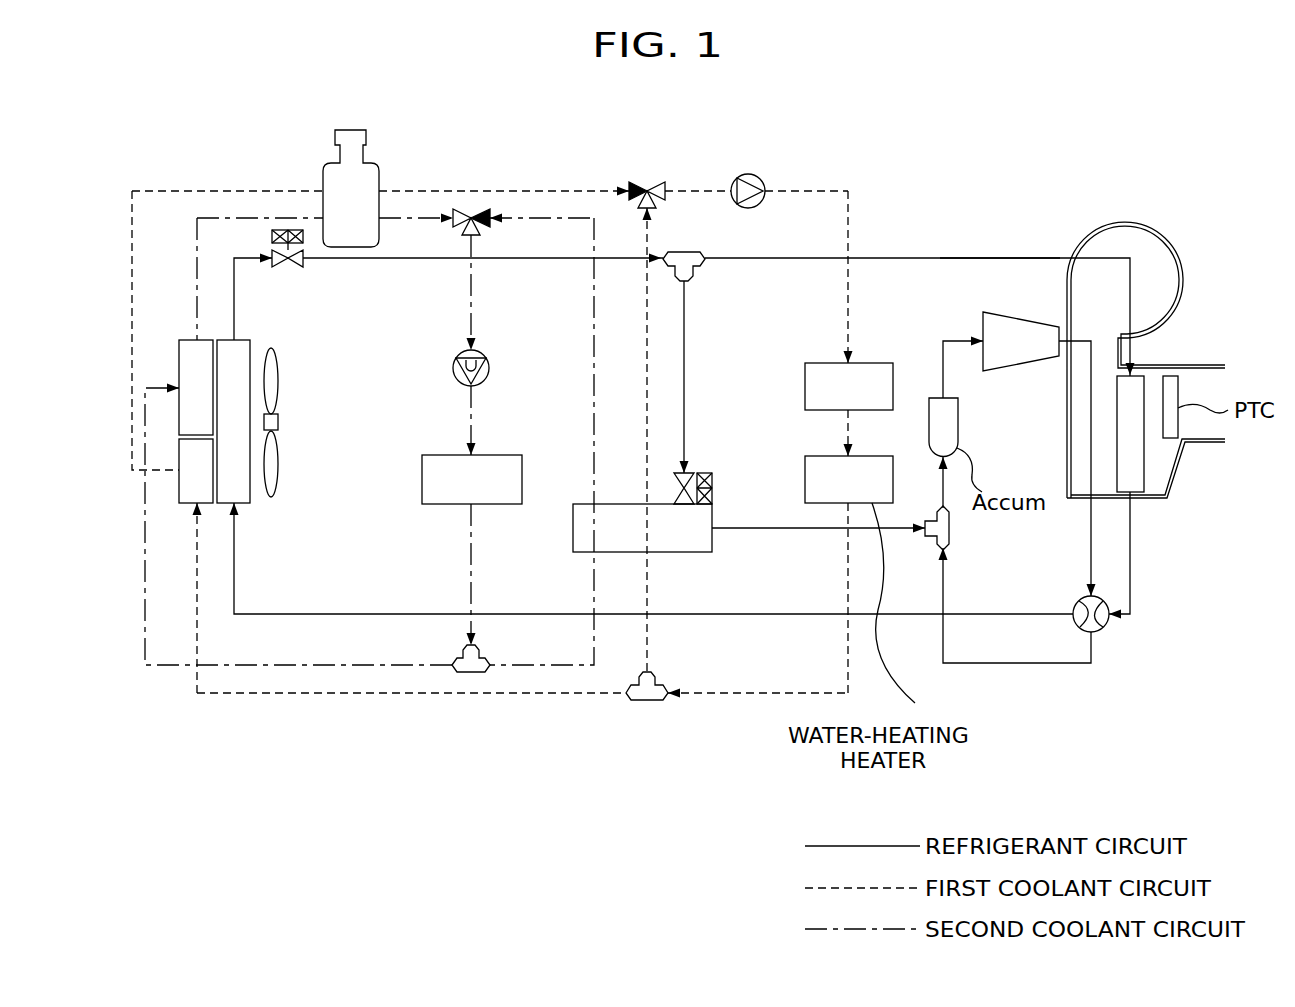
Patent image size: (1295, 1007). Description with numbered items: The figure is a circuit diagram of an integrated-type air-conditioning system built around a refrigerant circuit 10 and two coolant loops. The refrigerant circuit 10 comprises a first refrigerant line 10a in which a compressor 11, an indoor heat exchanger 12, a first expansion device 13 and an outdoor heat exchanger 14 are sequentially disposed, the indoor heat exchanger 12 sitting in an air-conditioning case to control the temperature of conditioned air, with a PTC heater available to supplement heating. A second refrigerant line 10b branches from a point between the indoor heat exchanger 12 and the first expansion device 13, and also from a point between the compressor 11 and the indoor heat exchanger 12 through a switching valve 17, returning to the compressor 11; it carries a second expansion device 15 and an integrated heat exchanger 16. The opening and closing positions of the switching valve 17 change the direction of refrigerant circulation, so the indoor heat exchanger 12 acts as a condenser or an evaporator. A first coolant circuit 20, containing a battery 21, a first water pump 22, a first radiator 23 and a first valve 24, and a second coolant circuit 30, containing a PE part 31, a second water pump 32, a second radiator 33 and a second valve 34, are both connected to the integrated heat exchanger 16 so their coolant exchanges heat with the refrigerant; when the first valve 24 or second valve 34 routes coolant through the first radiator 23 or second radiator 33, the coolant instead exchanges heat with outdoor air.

The refrigerant circuit 10 is at (797, 256).
The first refrigerant line 10a is at (996, 256).
The second refrigerant line 10b is at (752, 527).
The compressor 11 is at (983, 325).
The indoor heat exchanger 12 is at (1144, 475).
The first expansion device 13 is at (292, 268).
The outdoor heat exchanger 14 is at (250, 503).
The second expansion device 15 is at (707, 472).
The integrated heat exchanger 16 is at (690, 552).
The switching valve 17 is at (1105, 628).
The first coolant circuit 20 is at (541, 191).
The battery 21 is at (880, 363).
The first water pump 22 is at (748, 174).
The first radiator 23 is at (179, 493).
The first valve 24 is at (656, 180).
The second coolant circuit 30 is at (372, 665).
The PE part 31 is at (422, 480).
The second water pump 32 is at (453, 366).
The second radiator 33 is at (179, 362).
The second valve 34 is at (480, 206).